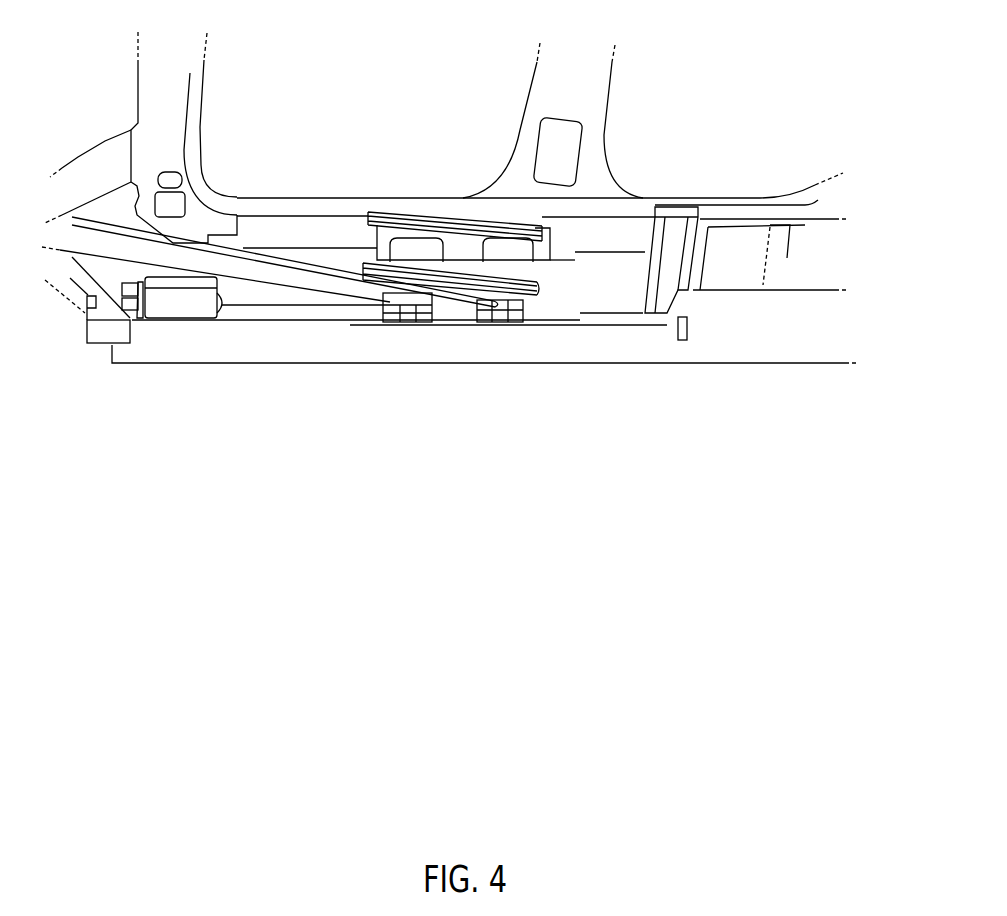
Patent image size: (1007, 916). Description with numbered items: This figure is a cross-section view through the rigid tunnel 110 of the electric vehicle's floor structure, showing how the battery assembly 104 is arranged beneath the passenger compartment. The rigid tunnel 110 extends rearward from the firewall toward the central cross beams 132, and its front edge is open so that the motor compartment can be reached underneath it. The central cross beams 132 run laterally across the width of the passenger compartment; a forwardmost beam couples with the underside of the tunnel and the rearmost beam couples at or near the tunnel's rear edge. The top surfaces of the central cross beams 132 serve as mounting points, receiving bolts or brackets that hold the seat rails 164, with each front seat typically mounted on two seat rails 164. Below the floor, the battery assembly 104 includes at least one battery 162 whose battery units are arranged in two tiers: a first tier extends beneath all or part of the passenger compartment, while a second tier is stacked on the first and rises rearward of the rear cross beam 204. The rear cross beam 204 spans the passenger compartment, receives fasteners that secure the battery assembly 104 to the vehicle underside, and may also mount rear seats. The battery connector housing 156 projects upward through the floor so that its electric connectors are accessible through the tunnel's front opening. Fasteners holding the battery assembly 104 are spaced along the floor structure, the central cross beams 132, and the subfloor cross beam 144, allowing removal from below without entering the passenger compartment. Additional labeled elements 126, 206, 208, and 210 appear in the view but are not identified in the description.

The battery assembly 104 is at (732, 380).
The rigid tunnel 110 is at (173, 243).
The rocker panel 126 is at (296, 202).
The central cross beams 132 is at (500, 248).
The subfloor cross beam 144 is at (93, 338).
The battery connector housing 156 is at (172, 300).
The battery 162 is at (325, 350).
The seat rails 164 is at (525, 283).
The rear cross beam 204 is at (683, 223).
The front mounting foot 206 is at (398, 247).
The rear mounting foot 208 is at (527, 247).
The fasteners 210 is at (423, 322).